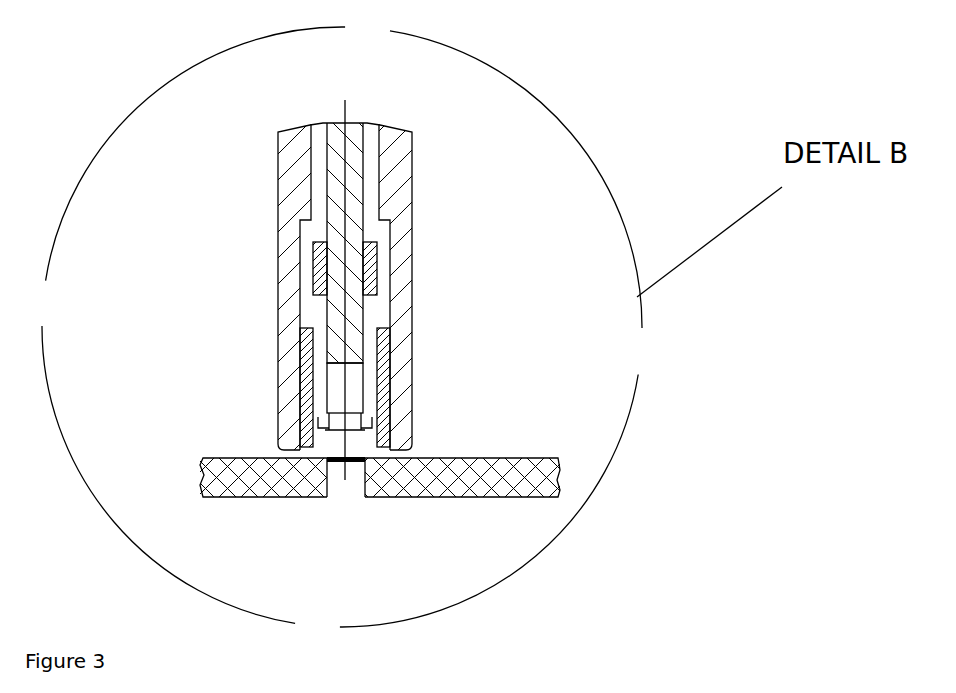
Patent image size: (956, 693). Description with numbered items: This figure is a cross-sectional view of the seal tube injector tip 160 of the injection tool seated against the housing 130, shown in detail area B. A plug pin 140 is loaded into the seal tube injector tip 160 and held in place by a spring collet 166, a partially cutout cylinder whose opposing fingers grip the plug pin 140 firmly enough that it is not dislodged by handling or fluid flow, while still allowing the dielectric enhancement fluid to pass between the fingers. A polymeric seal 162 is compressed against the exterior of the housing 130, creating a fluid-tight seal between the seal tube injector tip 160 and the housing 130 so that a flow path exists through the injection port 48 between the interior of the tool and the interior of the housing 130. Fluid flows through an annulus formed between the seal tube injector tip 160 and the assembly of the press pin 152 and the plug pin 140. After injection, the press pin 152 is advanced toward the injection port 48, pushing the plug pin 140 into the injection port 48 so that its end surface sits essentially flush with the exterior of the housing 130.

The press pin 152 is at (363, 146).
The seal tube injector tip 160 is at (250, 308).
The spring collet 166 is at (370, 250).
The polymeric seal 162 is at (375, 426).
The plug pin 140 is at (337, 397).
The housing 130 is at (493, 497).
The injection port 48 is at (340, 507).